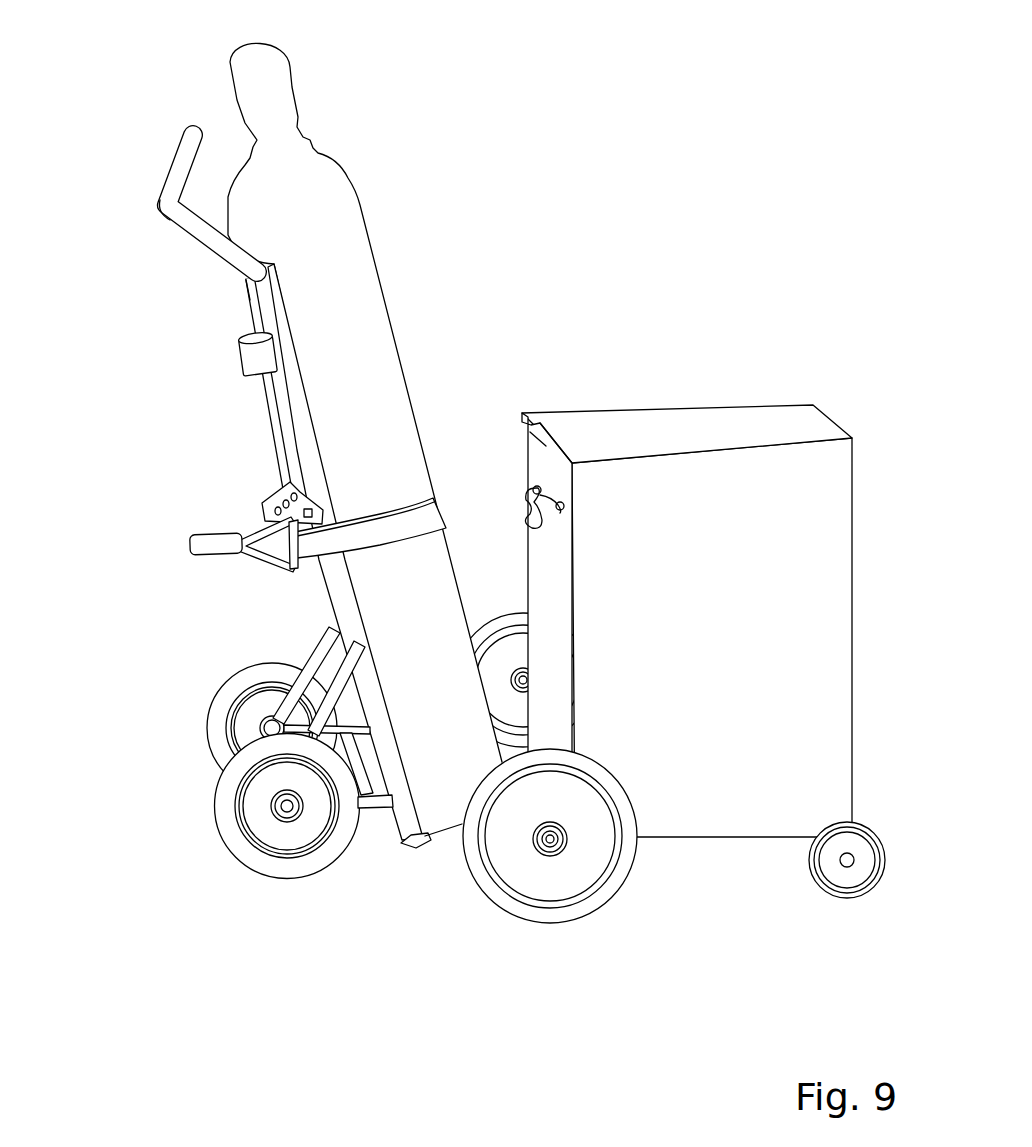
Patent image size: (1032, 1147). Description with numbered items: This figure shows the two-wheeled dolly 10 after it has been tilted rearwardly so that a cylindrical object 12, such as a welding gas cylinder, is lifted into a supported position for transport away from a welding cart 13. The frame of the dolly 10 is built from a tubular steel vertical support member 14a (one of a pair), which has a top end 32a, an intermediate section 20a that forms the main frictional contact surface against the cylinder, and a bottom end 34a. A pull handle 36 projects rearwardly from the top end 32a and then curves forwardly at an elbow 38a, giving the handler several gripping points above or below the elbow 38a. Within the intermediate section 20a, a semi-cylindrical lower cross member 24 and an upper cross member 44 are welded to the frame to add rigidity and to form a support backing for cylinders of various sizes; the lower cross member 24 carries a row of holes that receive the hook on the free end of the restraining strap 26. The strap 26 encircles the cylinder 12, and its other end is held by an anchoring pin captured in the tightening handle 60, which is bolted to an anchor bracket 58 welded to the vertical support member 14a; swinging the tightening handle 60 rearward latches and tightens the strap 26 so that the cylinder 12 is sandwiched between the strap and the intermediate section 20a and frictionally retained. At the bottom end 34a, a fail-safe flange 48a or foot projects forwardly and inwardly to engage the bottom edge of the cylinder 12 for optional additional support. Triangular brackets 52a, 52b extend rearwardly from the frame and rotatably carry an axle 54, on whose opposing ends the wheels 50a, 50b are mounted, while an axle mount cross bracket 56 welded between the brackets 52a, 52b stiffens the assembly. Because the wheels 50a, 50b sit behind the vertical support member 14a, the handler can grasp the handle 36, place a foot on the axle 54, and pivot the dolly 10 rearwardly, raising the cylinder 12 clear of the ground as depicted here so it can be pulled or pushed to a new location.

The dolly 10 is at (150, 303).
The cylindrical object 12 is at (338, 158).
The welding cart 13 is at (710, 420).
The vertical support member 14a is at (280, 419).
The intermediate section 20a is at (292, 388).
The lower cross member 24 is at (267, 505).
The restraining strap 26 is at (323, 565).
The top end 32a is at (256, 275).
The bottom end 34a is at (397, 850).
The pull handle 36 is at (183, 148).
The elbow 38a is at (155, 212).
The upper cross member 44 is at (250, 366).
The fail-safe flange 48a is at (427, 833).
The wheel 50a is at (220, 808).
The wheel 50b is at (207, 724).
The bracket 52a is at (327, 677).
The bracket 52b is at (323, 644).
The axle 54 is at (277, 813).
The axle mount cross bracket 56 is at (373, 808).
The anchor bracket 58 is at (370, 545).
The tightening handle 60 is at (190, 547).